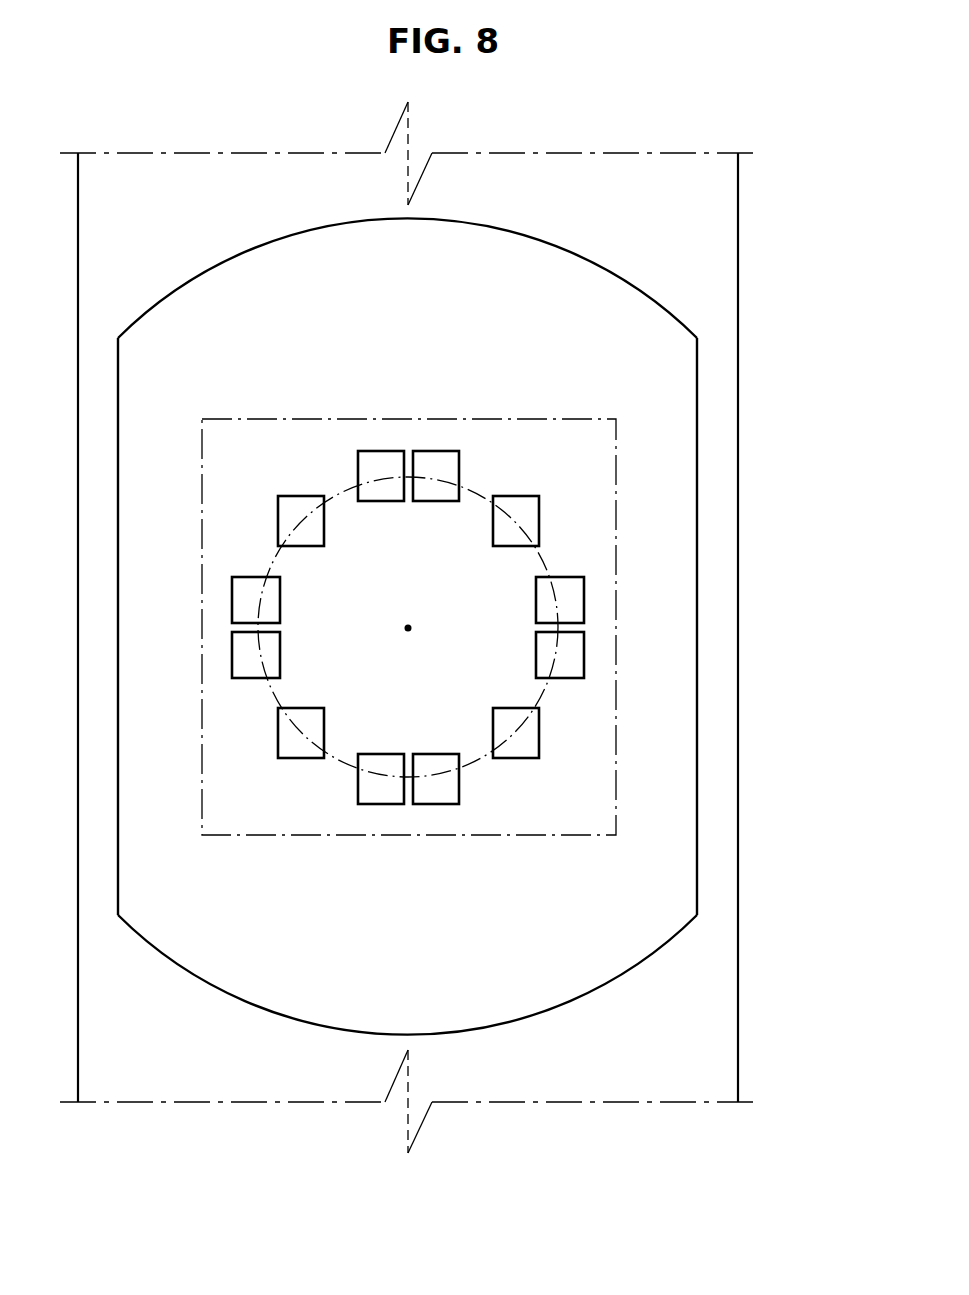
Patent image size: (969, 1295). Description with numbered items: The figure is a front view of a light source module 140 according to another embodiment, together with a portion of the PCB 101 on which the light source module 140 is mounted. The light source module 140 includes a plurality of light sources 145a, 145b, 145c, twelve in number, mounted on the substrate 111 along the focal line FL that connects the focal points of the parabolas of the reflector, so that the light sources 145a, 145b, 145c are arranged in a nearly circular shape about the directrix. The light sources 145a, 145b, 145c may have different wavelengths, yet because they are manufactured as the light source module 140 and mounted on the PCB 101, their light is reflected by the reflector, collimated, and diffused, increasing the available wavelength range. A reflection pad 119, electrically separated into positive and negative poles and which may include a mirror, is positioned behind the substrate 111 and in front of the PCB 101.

The PCB 101 is at (715, 208).
The light source module 140 is at (465, 626).
The reflection pad 119 is at (690, 880).
The substrate 111 is at (616, 811).
The focal line FL is at (540, 693).
The light source 145a is at (540, 500).
The light source 145b is at (585, 655).
The light source 145c is at (585, 600).